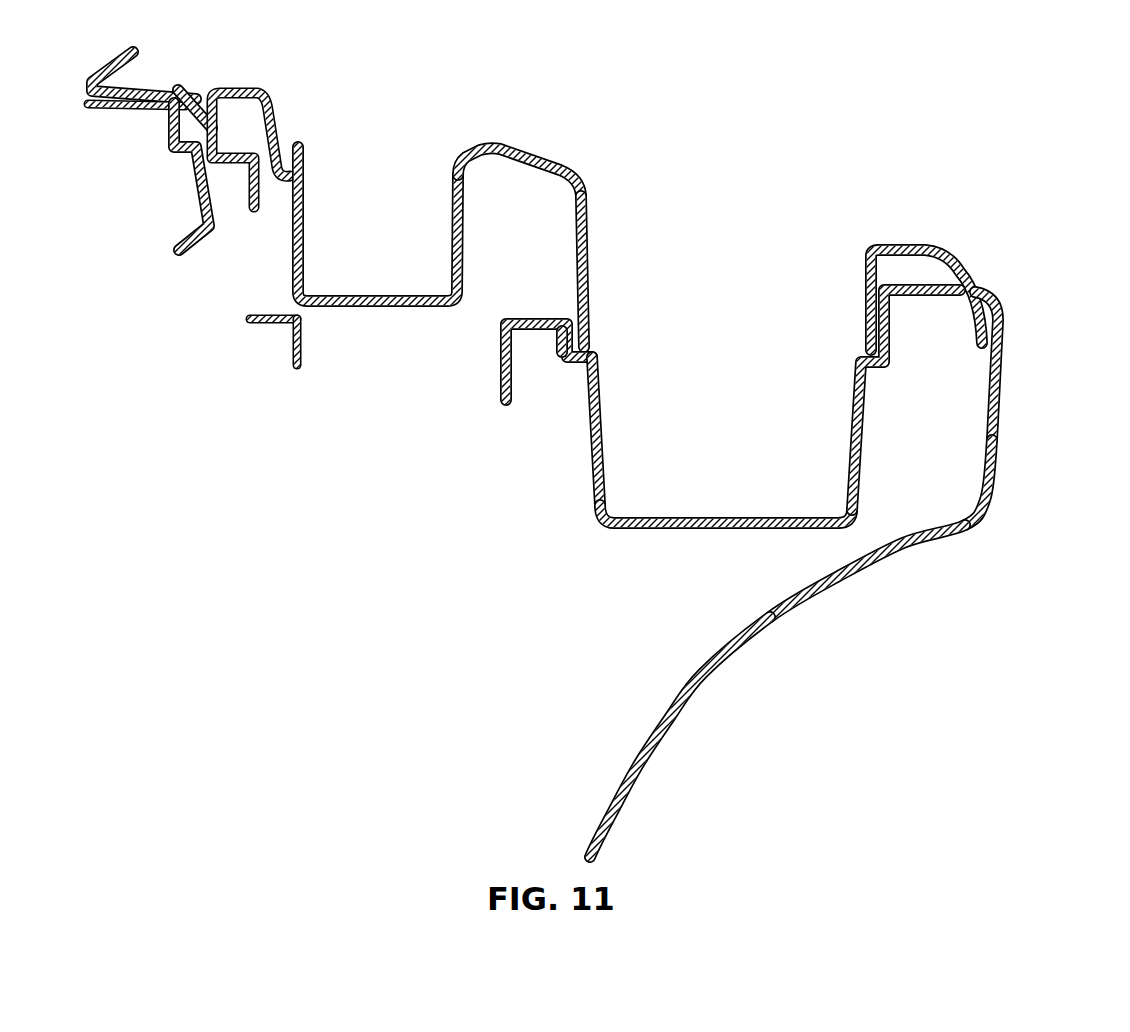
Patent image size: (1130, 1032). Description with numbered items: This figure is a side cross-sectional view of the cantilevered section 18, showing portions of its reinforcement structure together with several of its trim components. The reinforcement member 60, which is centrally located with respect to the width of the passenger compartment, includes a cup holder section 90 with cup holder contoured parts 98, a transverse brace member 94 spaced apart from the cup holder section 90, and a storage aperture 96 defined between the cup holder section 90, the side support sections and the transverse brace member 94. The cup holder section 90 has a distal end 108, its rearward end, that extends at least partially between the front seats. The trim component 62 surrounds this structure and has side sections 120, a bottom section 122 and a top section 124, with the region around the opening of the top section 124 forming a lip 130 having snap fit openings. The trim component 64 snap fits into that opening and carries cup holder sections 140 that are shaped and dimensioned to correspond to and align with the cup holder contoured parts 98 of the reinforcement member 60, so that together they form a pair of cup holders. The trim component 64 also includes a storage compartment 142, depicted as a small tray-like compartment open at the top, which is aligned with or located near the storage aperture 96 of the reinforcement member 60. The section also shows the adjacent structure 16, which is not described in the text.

The frame member 16 is at (192, 192).
The cantilevered section 18 is at (753, 115).
The reinforcement member 60 is at (578, 509).
The trim component 62 is at (1009, 471).
The trim component 64 is at (541, 155).
The cup holder section 90 is at (606, 450).
The transverse brace member 94 is at (299, 340).
The storage aperture 96 is at (418, 394).
The cup holder contoured parts 98 is at (850, 432).
The distal end 108 is at (1005, 326).
The side sections 120 is at (616, 812).
The bottom section 122 is at (933, 540).
The top section 124 is at (180, 92).
The lip 130 is at (271, 112).
The cup holder sections 140 is at (609, 268).
The storage compartment 142 is at (329, 243).